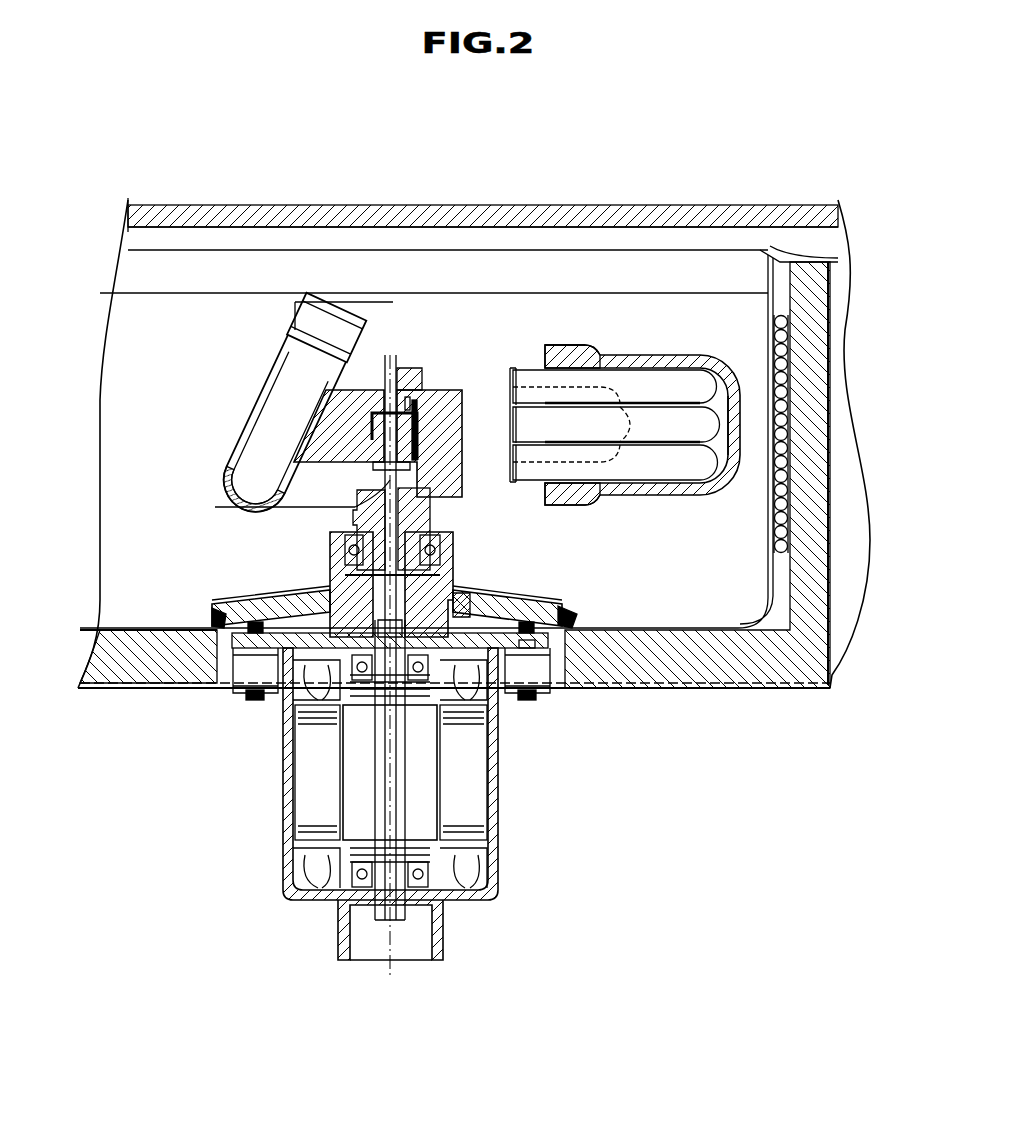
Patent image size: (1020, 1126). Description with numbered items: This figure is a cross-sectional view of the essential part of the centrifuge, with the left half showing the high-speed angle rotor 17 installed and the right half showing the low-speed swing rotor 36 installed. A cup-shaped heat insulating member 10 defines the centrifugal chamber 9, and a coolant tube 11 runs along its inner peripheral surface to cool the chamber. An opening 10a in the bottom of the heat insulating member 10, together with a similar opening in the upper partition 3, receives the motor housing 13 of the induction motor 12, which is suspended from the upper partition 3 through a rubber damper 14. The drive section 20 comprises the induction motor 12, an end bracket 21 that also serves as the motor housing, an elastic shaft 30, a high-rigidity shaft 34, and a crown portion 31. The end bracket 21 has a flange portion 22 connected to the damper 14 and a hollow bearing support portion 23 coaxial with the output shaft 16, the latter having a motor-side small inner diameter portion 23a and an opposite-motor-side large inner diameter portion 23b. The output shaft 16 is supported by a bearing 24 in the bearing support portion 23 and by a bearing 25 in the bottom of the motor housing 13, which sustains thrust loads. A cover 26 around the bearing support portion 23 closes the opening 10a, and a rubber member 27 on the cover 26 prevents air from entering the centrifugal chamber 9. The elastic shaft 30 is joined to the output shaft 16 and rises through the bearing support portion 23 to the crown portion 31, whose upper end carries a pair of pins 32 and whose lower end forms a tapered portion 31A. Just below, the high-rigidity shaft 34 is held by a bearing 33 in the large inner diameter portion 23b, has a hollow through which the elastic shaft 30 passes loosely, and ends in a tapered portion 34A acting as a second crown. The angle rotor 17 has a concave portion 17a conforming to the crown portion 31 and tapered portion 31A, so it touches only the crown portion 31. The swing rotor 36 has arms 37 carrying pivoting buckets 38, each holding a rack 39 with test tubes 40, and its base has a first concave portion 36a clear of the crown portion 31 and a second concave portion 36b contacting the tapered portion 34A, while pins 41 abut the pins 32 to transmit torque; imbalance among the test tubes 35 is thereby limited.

The upper partition 3 is at (820, 690).
The centrifugal chamber 9 is at (172, 327).
The heat insulating member 10 is at (812, 388).
The opening 10a is at (218, 690).
The coolant tube 11 is at (790, 337).
The induction motor 12 is at (387, 845).
The motor housing 13 is at (498, 805).
The damper 14 is at (250, 695).
The output shaft 16 is at (430, 830).
The high-speed angle rotor 17 is at (385, 395).
The concave portion 17a is at (380, 472).
The drive section 20 is at (332, 940).
The end bracket 21 is at (455, 562).
The flange portion 22 is at (235, 648).
The bearing support portion 23 is at (300, 604).
The small inner diameter portion 23a is at (545, 616).
The large inner diameter portion 23b is at (455, 582).
The bearing 24 is at (305, 735).
The bearing 25 is at (425, 868).
The cover 26 is at (497, 705).
The rubber member 27 is at (567, 612).
The elastic shaft 30 is at (350, 500).
The crown portion 31 is at (462, 463).
The tapered portion 31A is at (368, 440).
The pins 32 is at (370, 425).
The bearing 33 is at (345, 555).
The high-rigidity shaft 34 is at (360, 537).
The tapered portion 34A is at (440, 525).
The test tubes 35 is at (285, 370).
The low-speed swing rotor 36 is at (530, 377).
The first concave portion 36a is at (512, 390).
The second concave portion 36b is at (480, 500).
The arms 37 is at (455, 420).
The buckets 38 is at (702, 358).
The rack 39 is at (670, 363).
The test tubes 40 is at (572, 340).
The pins 41 is at (415, 368).